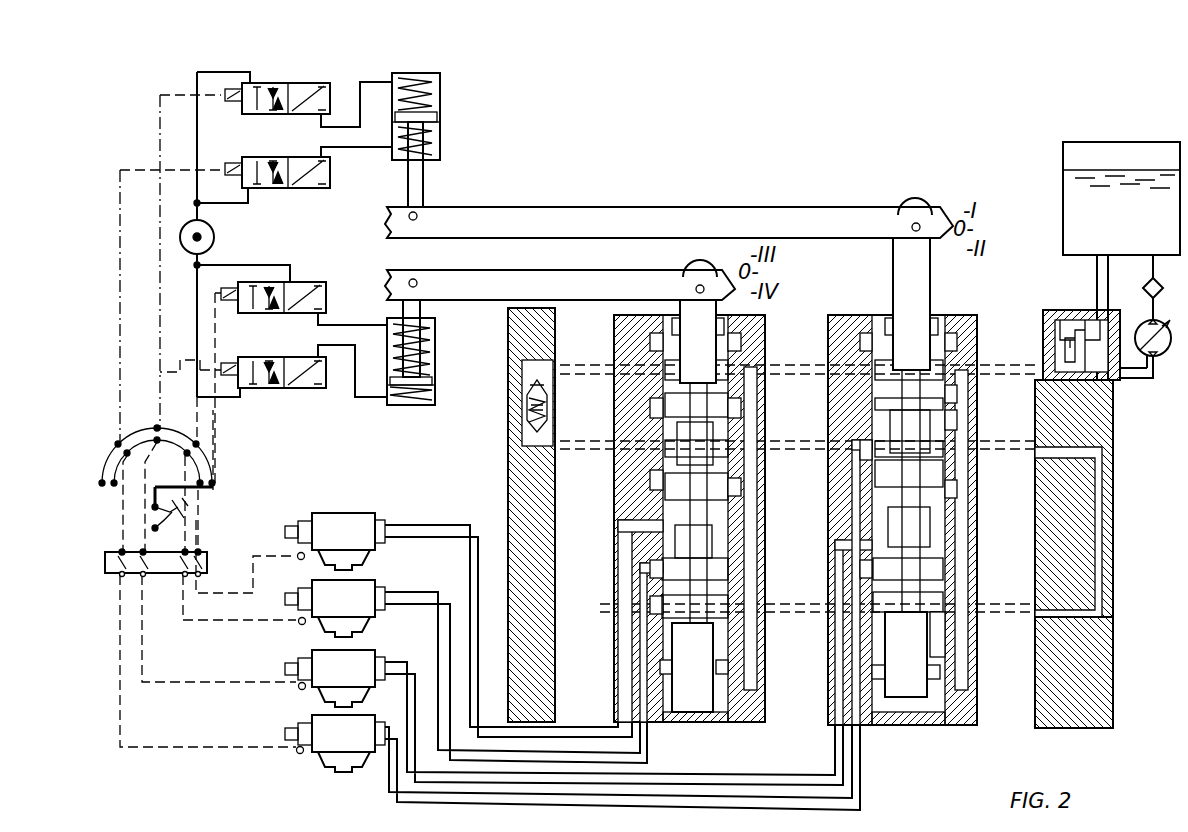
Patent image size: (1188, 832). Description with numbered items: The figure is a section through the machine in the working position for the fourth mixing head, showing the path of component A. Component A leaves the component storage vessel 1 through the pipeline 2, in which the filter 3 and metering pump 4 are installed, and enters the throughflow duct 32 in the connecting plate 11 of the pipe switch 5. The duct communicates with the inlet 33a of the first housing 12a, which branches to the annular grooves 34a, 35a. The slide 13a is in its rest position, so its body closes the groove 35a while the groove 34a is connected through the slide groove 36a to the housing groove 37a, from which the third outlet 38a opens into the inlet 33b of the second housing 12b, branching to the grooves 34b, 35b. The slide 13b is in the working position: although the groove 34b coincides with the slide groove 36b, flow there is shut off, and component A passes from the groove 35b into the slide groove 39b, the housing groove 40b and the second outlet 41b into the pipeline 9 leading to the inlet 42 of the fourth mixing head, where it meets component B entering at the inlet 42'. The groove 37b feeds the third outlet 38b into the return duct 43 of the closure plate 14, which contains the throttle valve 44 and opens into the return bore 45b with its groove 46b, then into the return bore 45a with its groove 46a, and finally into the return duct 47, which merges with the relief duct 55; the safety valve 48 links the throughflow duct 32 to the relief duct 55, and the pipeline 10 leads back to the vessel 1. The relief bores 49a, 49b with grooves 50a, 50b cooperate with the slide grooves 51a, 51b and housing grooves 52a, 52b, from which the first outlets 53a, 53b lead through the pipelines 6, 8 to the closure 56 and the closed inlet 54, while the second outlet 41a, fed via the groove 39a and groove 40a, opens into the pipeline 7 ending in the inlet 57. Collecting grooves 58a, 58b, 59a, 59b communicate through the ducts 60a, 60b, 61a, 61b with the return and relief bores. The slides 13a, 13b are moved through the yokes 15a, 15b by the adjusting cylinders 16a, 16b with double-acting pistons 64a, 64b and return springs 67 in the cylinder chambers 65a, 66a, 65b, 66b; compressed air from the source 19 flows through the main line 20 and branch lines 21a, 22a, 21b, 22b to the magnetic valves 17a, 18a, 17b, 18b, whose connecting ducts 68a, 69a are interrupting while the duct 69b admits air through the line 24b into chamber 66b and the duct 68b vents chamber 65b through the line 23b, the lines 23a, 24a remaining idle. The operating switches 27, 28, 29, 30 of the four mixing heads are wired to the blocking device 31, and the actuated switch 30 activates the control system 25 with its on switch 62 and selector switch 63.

The component storage vessel 1 is at (1063, 152).
The pipeline 2 is at (1153, 265).
The filter 3 is at (1143, 290).
The metering pump 4 is at (1140, 333).
The pipe switch 5 is at (950, 728).
The pipeline 6 is at (389, 777).
The pipeline 7 is at (412, 662).
The pipeline 8 is at (440, 592).
The pipeline 9 is at (470, 525).
The return line 10 is at (1097, 272).
The connecting plate 11 is at (1095, 682).
The first housing 12a is at (905, 502).
The second housing 12b is at (697, 485).
The slide 13a is at (893, 265).
The slide 13b is at (688, 272).
The closure plate 14 is at (527, 515).
The yoke 15a is at (556, 210).
The yoke 15b is at (500, 278).
The adjusting cylinder 16a is at (425, 160).
The adjusting cylinder 16b is at (430, 400).
The magnetic valve 17a is at (281, 179).
The magnetic valve 17b is at (273, 385).
The magnetic valve 18a is at (277, 102).
The magnetic valve 18b is at (288, 295).
The compressed air source 19 is at (188, 252).
The main line 20 is at (197, 140).
The branch line 21a is at (220, 203).
The branch line 21b is at (222, 397).
The branch line 22a is at (197, 72).
The branch line 22b is at (272, 265).
The compressed air line 23a is at (355, 147).
The compressed air line 23b is at (355, 397).
The compressed air line 24a is at (360, 82).
The compressed air line 24b is at (378, 325).
The control system 25 is at (218, 494).
The operating switch 27 is at (297, 754).
The operating switch 28 is at (299, 690).
The operating switch 29 is at (299, 625).
The operating switch 30 is at (298, 560).
The blocking device 31 is at (207, 565).
The throughflow duct 32 is at (1115, 378).
The inlet 33a is at (957, 392).
The inlet 33b is at (720, 392).
The annular groove 34a is at (957, 418).
The annular groove 34b is at (740, 405).
The annular groove 35a is at (930, 530).
The annular groove 35b is at (712, 535).
The annular groove 36a is at (943, 404).
The annular groove 36b is at (650, 405).
The annular groove 37a is at (957, 342).
The annular groove 37b is at (650, 340).
The third outlet 38a is at (860, 342).
The third outlet 38b is at (728, 342).
The annular groove 39a is at (957, 488).
The annular groove 39b is at (738, 505).
The annular groove 40a is at (943, 480).
The annular groove 40b is at (728, 490).
The second outlet 41a is at (835, 560).
The second outlet 41b is at (618, 508).
The inlet 42 is at (351, 525).
The inlet 42' is at (314, 512).
The return duct 43 is at (548, 380).
The throttle valve 44 is at (522, 415).
The return bore 45a is at (860, 450).
The return bore 45b is at (650, 478).
The annular groove 46a is at (943, 447).
The annular groove 46b is at (728, 447).
The return duct 47 is at (1100, 442).
The safety valve 48 is at (1075, 307).
The relief bore 49a is at (943, 605).
The relief bore 49b is at (728, 612).
The annular groove 50a is at (945, 640).
The annular groove 50b is at (650, 604).
The annular groove 51a is at (872, 570).
The annular groove 51b is at (650, 568).
The annular groove 52a is at (943, 570).
The annular groove 52b is at (728, 570).
The first outlet 53a is at (852, 660).
The first outlet 53b is at (640, 645).
The inlet 54 is at (382, 587).
The relief duct 55 is at (1095, 554).
The closure 56 is at (378, 722).
The inlet 57 is at (380, 657).
The annular collecting groove 58a is at (886, 320).
The annular collecting groove 58b is at (672, 322).
The annular collecting groove 59a is at (927, 690).
The annular collecting groove 59b is at (713, 690).
The duct 60a is at (878, 362).
The duct 60b is at (668, 362).
The duct 61a is at (940, 672).
The duct 61b is at (728, 667).
The on switch 62 is at (160, 527).
The selector switch 63 is at (185, 500).
The double-acting piston 64a is at (437, 118).
The double-acting piston 64b is at (432, 380).
The cylinder chamber 65a is at (440, 155).
The cylinder chamber 65b is at (435, 392).
The cylinder chamber 66a is at (441, 118).
The cylinder chamber 66b is at (441, 354).
The return spring 67 is at (430, 85).
The connecting duct 68a is at (300, 188).
The connecting duct 68b is at (292, 388).
The connecting duct 69a is at (292, 114).
The connecting duct 69b is at (290, 313).